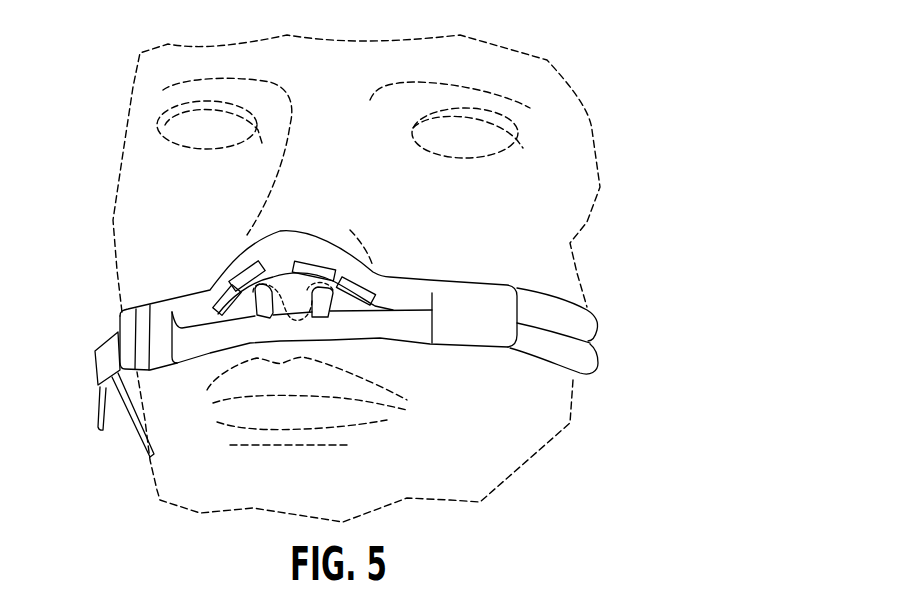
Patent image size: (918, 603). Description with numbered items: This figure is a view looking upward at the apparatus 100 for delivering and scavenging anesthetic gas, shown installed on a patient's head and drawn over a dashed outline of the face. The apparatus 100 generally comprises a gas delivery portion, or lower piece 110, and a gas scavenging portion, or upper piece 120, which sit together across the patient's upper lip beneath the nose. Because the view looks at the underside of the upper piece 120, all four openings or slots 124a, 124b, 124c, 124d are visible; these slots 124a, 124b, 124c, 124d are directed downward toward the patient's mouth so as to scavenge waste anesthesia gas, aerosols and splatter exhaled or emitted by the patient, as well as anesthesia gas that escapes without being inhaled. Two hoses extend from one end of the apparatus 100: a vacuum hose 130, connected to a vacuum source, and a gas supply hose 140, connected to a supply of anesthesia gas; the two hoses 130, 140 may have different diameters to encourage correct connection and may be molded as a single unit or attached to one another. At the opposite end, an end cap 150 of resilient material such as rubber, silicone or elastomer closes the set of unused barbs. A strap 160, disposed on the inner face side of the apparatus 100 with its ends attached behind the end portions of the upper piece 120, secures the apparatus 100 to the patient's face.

The apparatus 100 is at (395, 331).
The gas delivery portion 110 is at (374, 337).
The gas scavenging portion 120 is at (318, 280).
The slot 124a is at (380, 277).
The slot 124b is at (310, 260).
The slot 124c is at (250, 262).
The slot 124d is at (210, 298).
The vacuum hose 130 is at (560, 310).
The gas supply hose 140 is at (577, 356).
The end cap 150 is at (103, 340).
The strap 160 is at (123, 430).